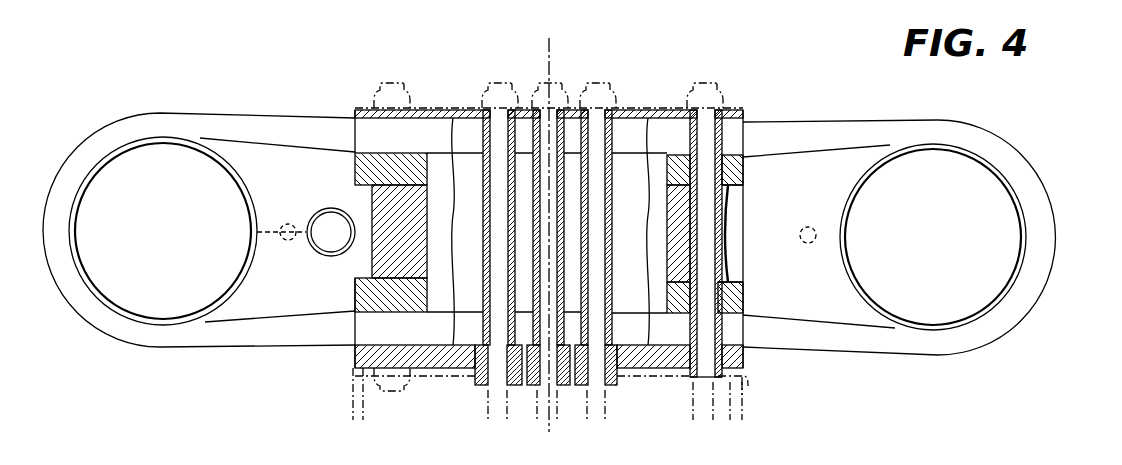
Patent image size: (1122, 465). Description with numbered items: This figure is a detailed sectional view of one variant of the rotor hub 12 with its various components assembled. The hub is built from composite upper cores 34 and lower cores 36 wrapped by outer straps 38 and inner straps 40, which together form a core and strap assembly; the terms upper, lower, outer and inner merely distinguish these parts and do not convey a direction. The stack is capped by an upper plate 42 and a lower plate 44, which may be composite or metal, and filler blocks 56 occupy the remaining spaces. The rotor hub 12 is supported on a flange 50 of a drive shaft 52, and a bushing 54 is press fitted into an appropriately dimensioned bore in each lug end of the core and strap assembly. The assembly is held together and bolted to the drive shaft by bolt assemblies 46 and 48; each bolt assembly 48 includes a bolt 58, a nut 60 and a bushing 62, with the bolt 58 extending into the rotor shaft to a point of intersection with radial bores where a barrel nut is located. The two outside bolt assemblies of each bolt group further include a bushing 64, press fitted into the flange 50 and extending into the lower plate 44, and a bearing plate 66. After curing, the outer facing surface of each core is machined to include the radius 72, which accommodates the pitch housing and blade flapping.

The rotor hub 12 is at (825, 65).
The upper core 34 is at (282, 300).
The lower core 36 is at (372, 200).
The outer strap 38 is at (113, 133).
The inner strap 40 is at (348, 152).
The upper plate 42 is at (453, 118).
The lower plate 44 is at (358, 353).
The bolt assembly 46 is at (724, 92).
The bolt assembly 48 is at (614, 82).
The flange 50 is at (428, 378).
The drive shaft 52 is at (742, 393).
The bushing 54 is at (213, 313).
The filler block 56 is at (367, 128).
The bolt 58 is at (500, 116).
The nut 60 is at (506, 82).
The bushing 62 is at (483, 290).
The bushing 64 is at (617, 377).
The bearing plate 66 is at (633, 108).
The radius 72 is at (727, 262).